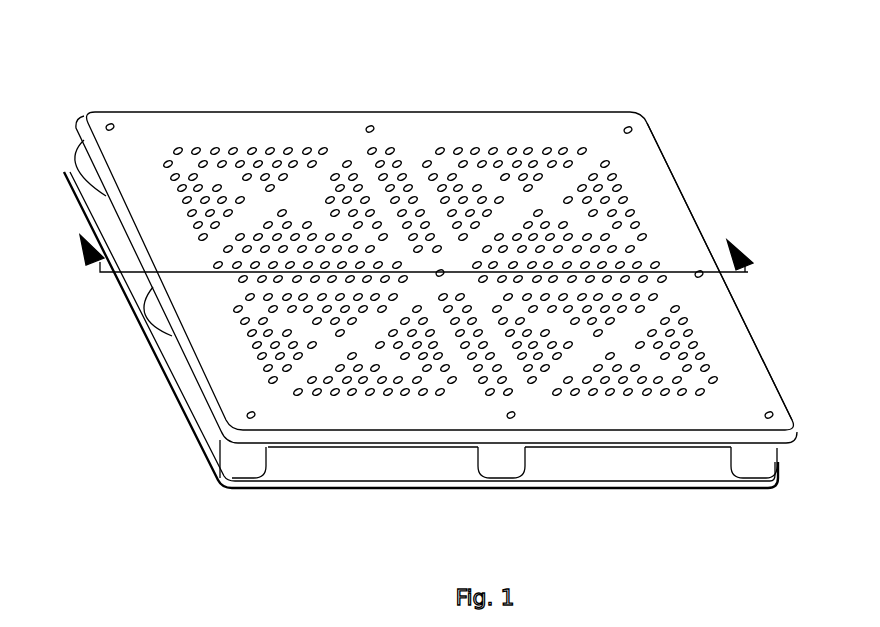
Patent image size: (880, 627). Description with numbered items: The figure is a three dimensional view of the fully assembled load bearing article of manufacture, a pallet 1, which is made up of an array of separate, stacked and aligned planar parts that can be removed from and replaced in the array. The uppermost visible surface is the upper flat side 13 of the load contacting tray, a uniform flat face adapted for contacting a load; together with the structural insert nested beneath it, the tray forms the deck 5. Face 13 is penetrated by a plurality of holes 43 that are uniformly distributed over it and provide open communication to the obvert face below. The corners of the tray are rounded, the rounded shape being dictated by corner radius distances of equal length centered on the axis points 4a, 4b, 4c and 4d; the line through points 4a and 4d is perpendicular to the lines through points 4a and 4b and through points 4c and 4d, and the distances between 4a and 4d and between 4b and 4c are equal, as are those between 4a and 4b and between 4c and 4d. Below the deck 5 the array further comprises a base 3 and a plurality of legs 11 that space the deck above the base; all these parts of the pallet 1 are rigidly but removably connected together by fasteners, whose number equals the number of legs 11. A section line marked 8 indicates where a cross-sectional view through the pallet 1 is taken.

The pallet 1 is at (134, 402).
The base 3 is at (673, 489).
The deck 5 is at (688, 197).
The section line 8- 8 is at (411, 242).
The legs 11 is at (82, 146).
The upper flat side 13 is at (149, 159).
The holes 43 is at (520, 150).
The axis point 4a is at (251, 419).
The axis point 4b is at (115, 127).
The axis point 4c is at (633, 130).
The axis point 4d is at (773, 414).